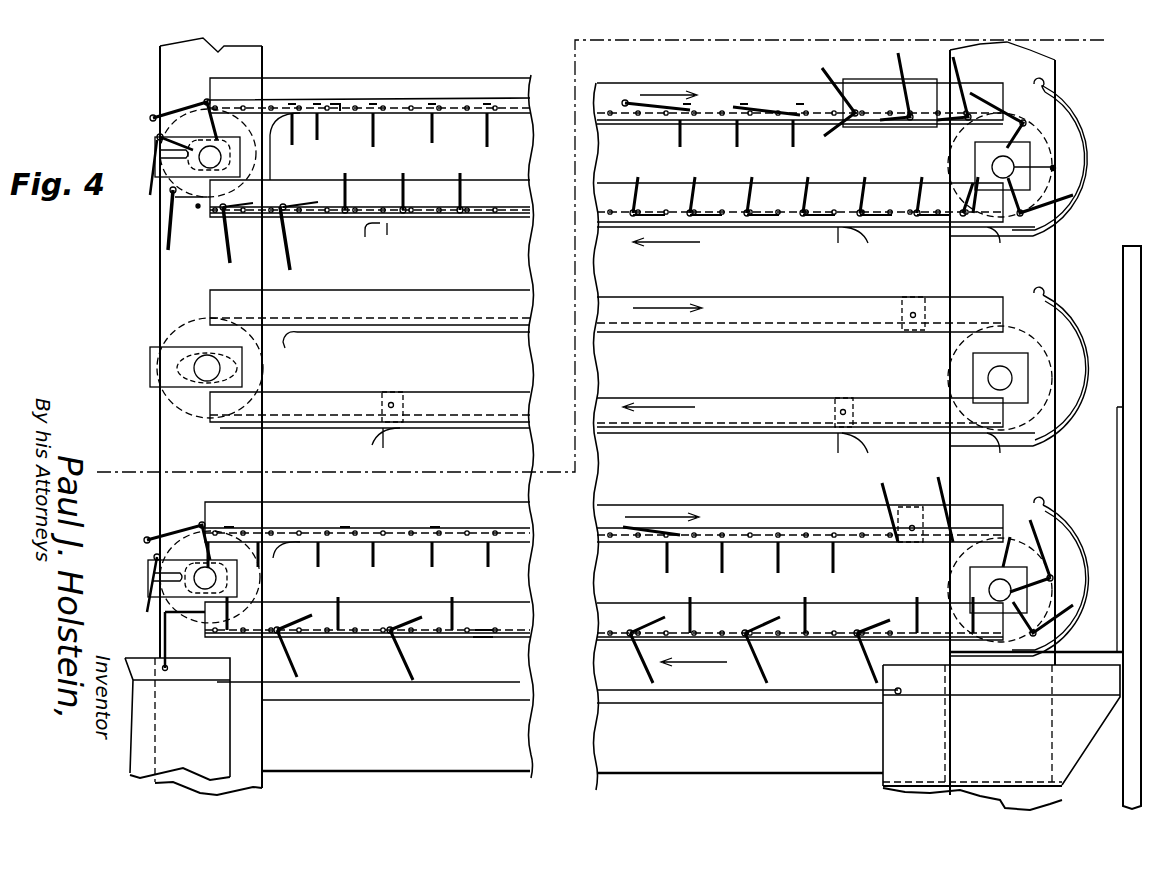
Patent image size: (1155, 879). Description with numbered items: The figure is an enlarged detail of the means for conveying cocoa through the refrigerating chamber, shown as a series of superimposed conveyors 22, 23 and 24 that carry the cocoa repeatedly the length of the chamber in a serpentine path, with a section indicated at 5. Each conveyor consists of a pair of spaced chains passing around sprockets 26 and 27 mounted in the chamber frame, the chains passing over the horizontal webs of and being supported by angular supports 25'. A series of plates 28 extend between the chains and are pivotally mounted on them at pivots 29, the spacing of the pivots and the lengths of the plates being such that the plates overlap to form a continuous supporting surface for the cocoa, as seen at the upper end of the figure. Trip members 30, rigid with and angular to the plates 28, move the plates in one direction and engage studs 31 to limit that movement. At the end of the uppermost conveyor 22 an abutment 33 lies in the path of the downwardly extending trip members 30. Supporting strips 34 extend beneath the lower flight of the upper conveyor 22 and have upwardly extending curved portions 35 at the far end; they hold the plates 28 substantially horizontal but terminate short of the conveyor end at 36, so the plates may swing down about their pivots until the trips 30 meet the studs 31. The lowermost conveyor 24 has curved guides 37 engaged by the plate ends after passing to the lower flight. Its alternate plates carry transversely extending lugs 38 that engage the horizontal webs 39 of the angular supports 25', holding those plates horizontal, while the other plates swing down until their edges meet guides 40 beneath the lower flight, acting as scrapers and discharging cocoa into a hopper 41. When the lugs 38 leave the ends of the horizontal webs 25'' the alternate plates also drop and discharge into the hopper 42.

The section line 5- 5 is at (100, 472).
The uppermost conveyor 22 is at (342, 147).
The conveyor 23 is at (340, 359).
The lowermost conveyor 24 is at (338, 636).
The angular supports 25' is at (367, 337).
The horizontal webs 25'' is at (575, 692).
The sprockets 26 is at (157, 192).
The sprockets 27 is at (950, 155).
The plates 28 is at (386, 107).
The pivots 29 is at (334, 112).
The trip members 30 is at (374, 130).
The studs 31 is at (253, 205).
The abutment 33 is at (880, 120).
The supporting strips 34 is at (920, 228).
The curved portions 35 is at (1090, 168).
The termination of supporting strips 36 is at (367, 232).
The curved guides 37 is at (1083, 560).
The lugs 38 is at (208, 527).
The horizontal webs 39 is at (455, 640).
The guides 40 is at (785, 692).
The hopper 41 is at (1001, 737).
The hopper 42 is at (193, 726).